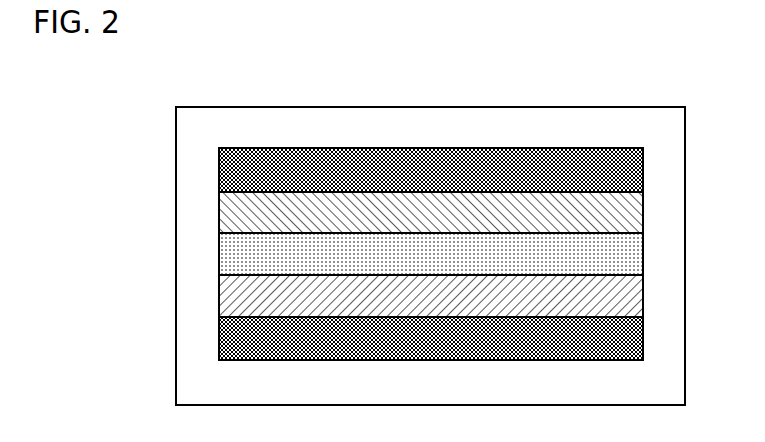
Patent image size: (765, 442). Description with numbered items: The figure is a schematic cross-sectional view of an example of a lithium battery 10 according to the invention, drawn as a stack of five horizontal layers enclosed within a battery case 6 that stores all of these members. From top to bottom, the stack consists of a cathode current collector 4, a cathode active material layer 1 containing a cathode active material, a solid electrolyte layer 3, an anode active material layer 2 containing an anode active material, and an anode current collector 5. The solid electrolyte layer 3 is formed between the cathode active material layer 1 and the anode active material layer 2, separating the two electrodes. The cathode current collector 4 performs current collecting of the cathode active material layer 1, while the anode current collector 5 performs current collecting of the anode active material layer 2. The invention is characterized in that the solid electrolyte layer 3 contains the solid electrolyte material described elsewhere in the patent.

The lithium battery 10 is at (666, 52).
The battery case 6 is at (661, 120).
The cathode current collector 4 is at (627, 162).
The cathode active material layer 1 is at (630, 203).
The solid electrolyte layer 3 is at (630, 247).
The anode active material layer 2 is at (632, 288).
The anode current collector 5 is at (632, 332).